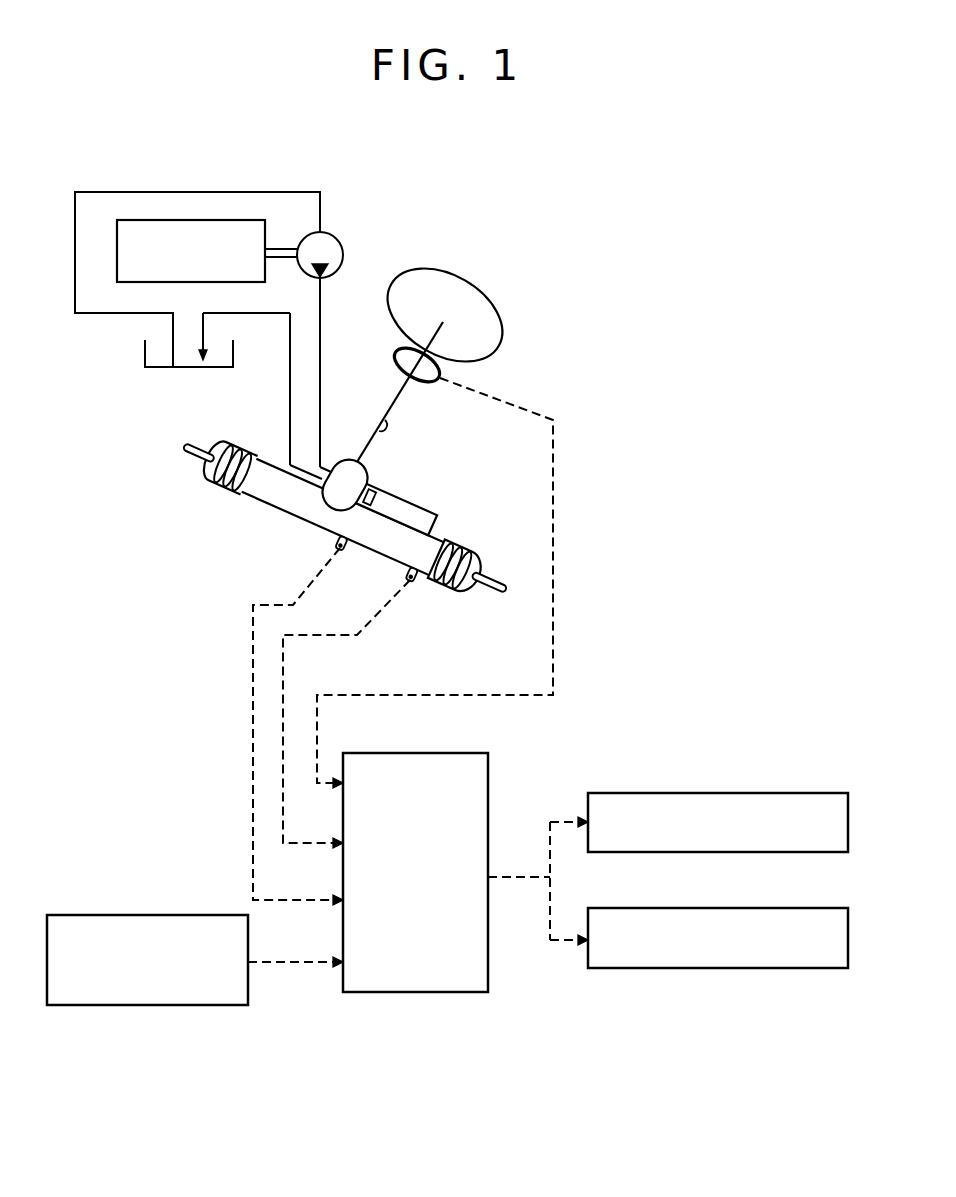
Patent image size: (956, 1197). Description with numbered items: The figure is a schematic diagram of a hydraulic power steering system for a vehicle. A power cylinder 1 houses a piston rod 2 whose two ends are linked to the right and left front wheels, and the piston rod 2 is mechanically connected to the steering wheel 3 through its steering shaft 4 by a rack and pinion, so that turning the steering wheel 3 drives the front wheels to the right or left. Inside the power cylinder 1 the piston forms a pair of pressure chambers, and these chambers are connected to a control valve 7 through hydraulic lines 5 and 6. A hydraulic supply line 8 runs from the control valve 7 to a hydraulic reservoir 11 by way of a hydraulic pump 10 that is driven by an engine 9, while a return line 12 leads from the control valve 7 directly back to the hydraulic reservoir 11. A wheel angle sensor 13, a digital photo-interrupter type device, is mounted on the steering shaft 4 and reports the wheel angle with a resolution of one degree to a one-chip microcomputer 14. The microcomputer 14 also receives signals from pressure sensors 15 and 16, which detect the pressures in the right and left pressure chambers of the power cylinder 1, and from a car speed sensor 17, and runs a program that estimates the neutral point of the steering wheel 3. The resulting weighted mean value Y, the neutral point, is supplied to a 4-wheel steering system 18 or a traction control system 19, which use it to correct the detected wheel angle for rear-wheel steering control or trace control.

The power cylinder 1 is at (380, 546).
The piston rod 2 is at (487, 572).
The steering wheel 3 is at (445, 268).
The steering shaft 4 is at (383, 436).
The hydraulic line 5 is at (427, 507).
The hydraulic line 6 is at (371, 482).
The control valve 7 is at (340, 460).
The hydraulic supply line 8 is at (321, 333).
The engine 9 is at (235, 220).
The hydraulic pump 10 is at (340, 240).
The hydraulic reservoir 11 is at (175, 367).
The return line 12 is at (289, 396).
The wheel angle sensor 13 is at (433, 383).
The microcomputer 14 is at (488, 775).
The pressure sensor 15 is at (418, 582).
The pressure sensor 16 is at (336, 540).
The car speed sensor 17 is at (82, 915).
The 4-wheel steering system 18 is at (798, 793).
The traction control system 19 is at (798, 908).